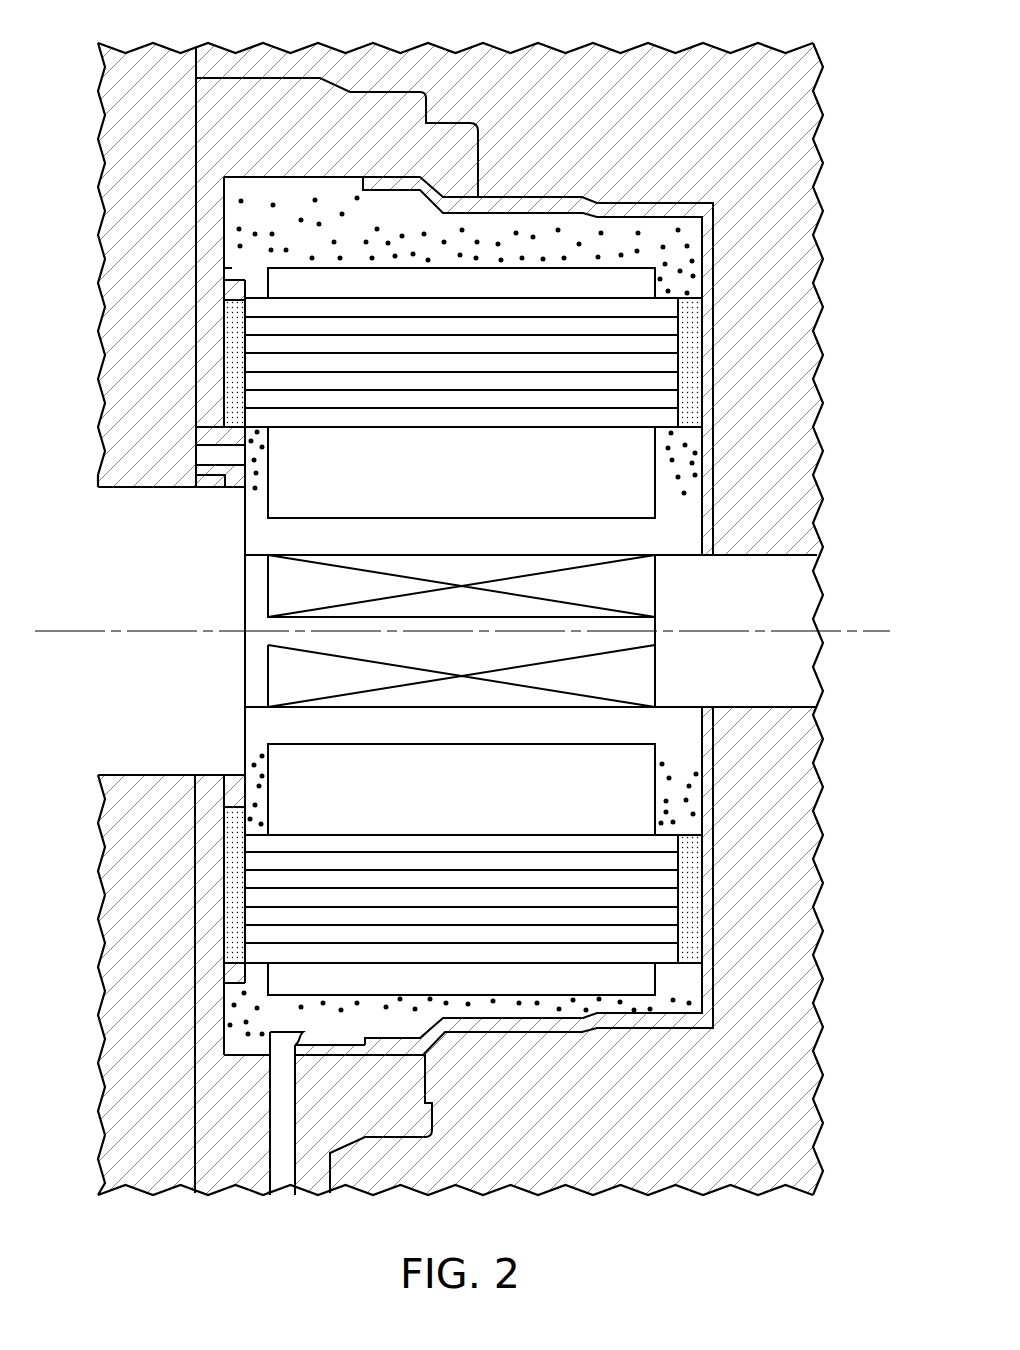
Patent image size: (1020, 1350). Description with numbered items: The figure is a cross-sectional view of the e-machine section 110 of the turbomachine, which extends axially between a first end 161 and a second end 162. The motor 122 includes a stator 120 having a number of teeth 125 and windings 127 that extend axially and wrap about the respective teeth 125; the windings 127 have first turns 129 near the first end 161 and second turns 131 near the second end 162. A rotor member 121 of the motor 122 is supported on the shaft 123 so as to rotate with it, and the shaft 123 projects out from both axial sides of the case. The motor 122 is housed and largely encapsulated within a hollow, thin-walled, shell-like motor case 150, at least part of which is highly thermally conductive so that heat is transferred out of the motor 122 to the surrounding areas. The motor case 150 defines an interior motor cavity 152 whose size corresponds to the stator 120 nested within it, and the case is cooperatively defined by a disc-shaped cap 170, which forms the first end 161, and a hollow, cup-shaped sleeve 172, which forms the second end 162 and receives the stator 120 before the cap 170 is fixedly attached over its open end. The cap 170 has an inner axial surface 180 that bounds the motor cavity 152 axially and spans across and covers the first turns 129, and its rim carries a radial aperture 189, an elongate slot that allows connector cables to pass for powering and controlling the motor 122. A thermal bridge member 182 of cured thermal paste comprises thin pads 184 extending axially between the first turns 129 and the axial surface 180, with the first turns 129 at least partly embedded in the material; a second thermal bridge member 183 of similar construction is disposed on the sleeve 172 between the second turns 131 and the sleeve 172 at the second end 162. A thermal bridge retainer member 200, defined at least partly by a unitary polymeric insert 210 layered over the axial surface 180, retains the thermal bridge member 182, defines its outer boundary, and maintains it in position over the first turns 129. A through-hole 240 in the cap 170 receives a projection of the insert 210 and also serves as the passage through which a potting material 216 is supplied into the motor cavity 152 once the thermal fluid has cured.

The e-machine section 110 is at (641, 105).
The stator 120 is at (467, 288).
The rotor member 121 is at (468, 578).
The motor 122 is at (650, 488).
The shaft 123 is at (800, 580).
The teeth 125 is at (604, 285).
The windings 127 is at (417, 393).
The first turns 129 is at (226, 404).
The second turns 131 is at (672, 327).
The motor case 150 is at (722, 216).
The motor cavity 152 is at (250, 229).
The first end 161 is at (195, 813).
The second end 162 is at (717, 760).
The cap 170 is at (318, 110).
The sleeve 172 is at (544, 201).
The axial surface 180 is at (228, 272).
The thermal bridge member 182 is at (233, 322).
The second thermal bridge member 183 is at (692, 392).
The pad 184 is at (240, 418).
The radial aperture 189 is at (290, 1097).
The thermal bridge retainer member 200 is at (222, 278).
The insert 210 is at (222, 973).
The potting material 216 is at (258, 484).
The through-hole 240 is at (206, 463).